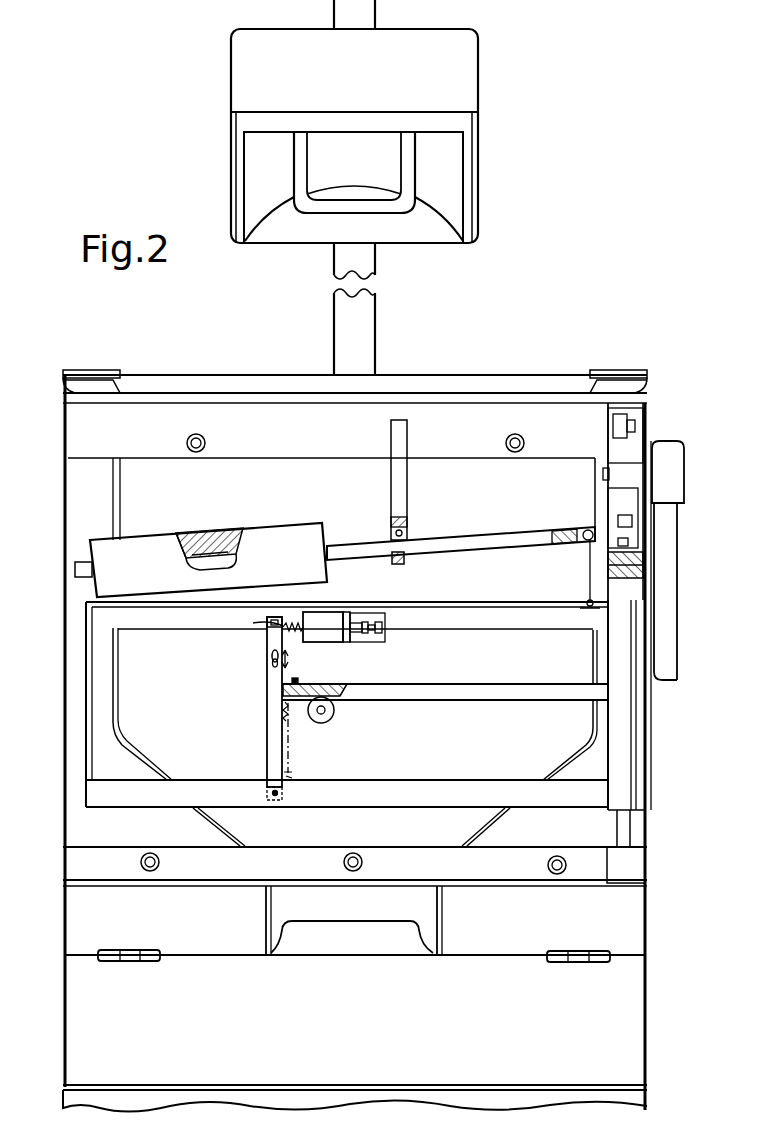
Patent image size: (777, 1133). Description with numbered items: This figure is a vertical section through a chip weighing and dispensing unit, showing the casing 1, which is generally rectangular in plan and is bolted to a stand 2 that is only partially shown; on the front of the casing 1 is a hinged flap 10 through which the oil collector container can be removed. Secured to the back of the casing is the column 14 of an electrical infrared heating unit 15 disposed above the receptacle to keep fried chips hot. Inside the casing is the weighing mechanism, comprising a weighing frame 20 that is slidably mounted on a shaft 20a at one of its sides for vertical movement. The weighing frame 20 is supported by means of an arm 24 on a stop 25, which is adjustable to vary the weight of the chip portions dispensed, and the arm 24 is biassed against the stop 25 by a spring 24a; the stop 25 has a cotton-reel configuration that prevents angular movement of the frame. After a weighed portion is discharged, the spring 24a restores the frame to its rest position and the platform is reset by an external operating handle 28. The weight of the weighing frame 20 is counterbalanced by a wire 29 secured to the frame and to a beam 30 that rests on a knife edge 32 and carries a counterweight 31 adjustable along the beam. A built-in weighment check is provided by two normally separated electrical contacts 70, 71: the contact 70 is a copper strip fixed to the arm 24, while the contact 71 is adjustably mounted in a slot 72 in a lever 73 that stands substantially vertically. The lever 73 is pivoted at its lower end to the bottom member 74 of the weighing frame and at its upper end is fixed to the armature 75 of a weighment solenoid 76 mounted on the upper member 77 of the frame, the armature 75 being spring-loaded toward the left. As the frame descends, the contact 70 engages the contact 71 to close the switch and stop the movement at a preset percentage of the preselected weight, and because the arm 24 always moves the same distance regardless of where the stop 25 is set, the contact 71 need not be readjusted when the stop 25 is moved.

The casing 1 is at (63, 607).
The stand 2 is at (633, 1102).
The hinged flap 10 is at (358, 1037).
The column 14 is at (370, 327).
The heating unit 15 is at (484, 176).
The weighing frame 20 is at (147, 610).
The shaft 20a is at (622, 830).
The arm 24 is at (462, 695).
The spring 24a is at (296, 773).
The stop 25 is at (327, 717).
The operating handle 28 is at (677, 680).
The wire 29 is at (645, 567).
The beam 30 is at (488, 540).
The counterweight 31 is at (272, 542).
The knife edge 32 is at (400, 562).
The electrical contact 70 is at (272, 690).
The electrical contact 71 is at (272, 662).
The slot 72 is at (270, 653).
The lever 73 is at (267, 733).
The bottom member 74 is at (508, 795).
The armature 75 is at (263, 623).
The weighment solenoid 76 is at (370, 637).
The upper member 77 is at (502, 617).